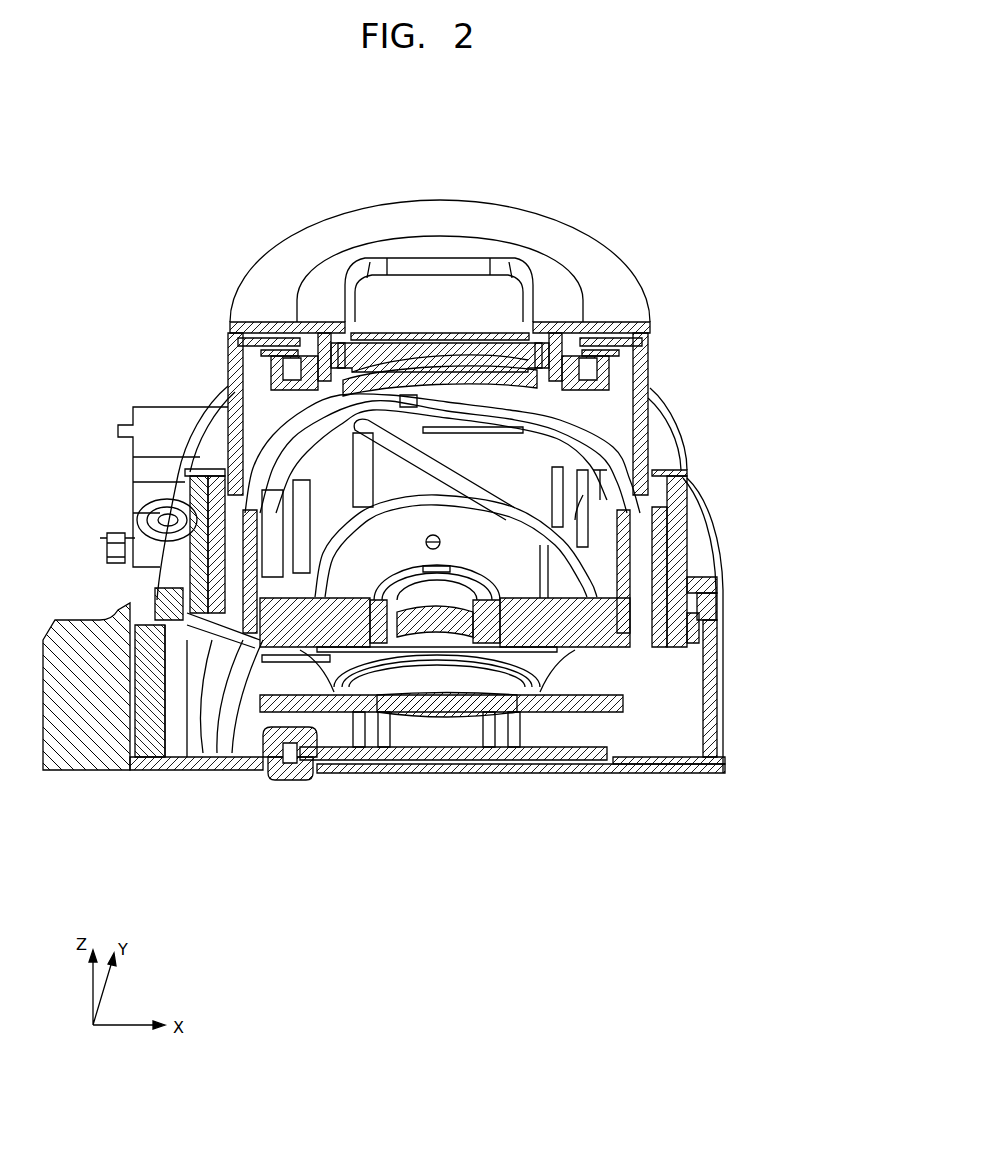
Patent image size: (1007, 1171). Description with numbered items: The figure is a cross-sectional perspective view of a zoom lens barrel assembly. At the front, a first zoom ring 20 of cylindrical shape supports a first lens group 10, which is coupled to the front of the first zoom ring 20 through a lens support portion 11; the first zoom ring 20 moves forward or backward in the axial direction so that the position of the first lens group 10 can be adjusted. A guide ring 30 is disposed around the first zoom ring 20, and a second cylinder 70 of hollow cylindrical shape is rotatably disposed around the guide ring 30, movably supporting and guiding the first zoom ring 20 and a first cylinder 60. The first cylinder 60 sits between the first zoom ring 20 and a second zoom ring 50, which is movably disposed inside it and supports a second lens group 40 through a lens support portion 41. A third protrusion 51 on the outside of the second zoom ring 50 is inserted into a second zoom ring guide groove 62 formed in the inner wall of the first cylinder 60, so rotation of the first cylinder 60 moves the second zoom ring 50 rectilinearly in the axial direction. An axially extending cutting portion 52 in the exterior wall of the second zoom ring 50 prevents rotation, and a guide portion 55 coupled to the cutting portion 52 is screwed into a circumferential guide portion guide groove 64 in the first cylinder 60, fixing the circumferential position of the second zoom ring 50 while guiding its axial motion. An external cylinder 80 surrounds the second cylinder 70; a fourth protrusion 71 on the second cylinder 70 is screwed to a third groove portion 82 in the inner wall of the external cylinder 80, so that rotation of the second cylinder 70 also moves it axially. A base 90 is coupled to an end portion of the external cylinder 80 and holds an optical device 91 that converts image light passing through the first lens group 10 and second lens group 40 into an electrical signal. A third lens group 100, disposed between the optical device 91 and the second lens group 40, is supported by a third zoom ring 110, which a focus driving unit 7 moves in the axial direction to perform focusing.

The focus driving unit 7 is at (137, 523).
The first lens group 10 is at (463, 362).
The lens support portion 11 is at (573, 357).
The first zoom ring 20 is at (650, 378).
The guide ring 30 is at (660, 600).
The second lens group 40 is at (412, 618).
The lens support portion 41 is at (393, 612).
The second zoom ring 50 is at (572, 648).
The third protrusion 51 is at (237, 650).
The cutting portion 52 is at (545, 548).
The guide portion 55 is at (573, 508).
The first cylinder 60 is at (613, 452).
The second zoom ring guide groove 62 is at (372, 462).
The guide portion guide groove 64 is at (430, 425).
The second cylinder 70 is at (690, 553).
The fourth protrusion 71 is at (699, 613).
The external cylinder 80 is at (720, 683).
The third groove portion 82 is at (713, 590).
The base 90 is at (672, 777).
The optical device 91 is at (417, 735).
The third lens group 100 is at (443, 737).
The third zoom ring 110 is at (243, 657).